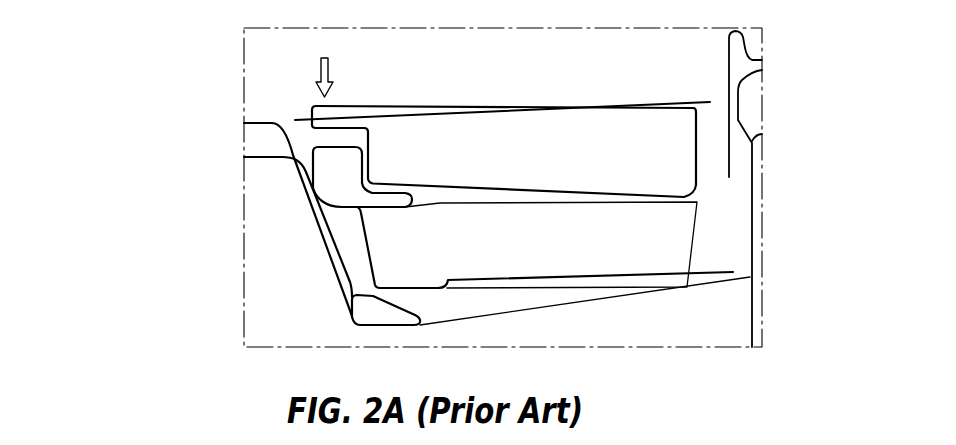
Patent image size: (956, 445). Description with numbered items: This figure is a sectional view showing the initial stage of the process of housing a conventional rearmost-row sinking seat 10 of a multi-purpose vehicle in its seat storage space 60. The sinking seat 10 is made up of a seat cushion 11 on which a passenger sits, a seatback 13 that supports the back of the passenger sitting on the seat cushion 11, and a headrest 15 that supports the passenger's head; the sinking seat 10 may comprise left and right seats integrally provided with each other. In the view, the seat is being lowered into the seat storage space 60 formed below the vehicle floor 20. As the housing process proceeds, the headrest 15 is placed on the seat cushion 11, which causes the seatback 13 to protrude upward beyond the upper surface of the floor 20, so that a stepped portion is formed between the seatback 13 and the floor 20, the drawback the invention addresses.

The sinking seat 10 is at (152, 180).
The seat cushion 11 is at (385, 233).
The seatback 13 is at (403, 170).
The headrest 15 is at (328, 168).
The floor 20 is at (263, 122).
The seat storage space 60 is at (355, 253).